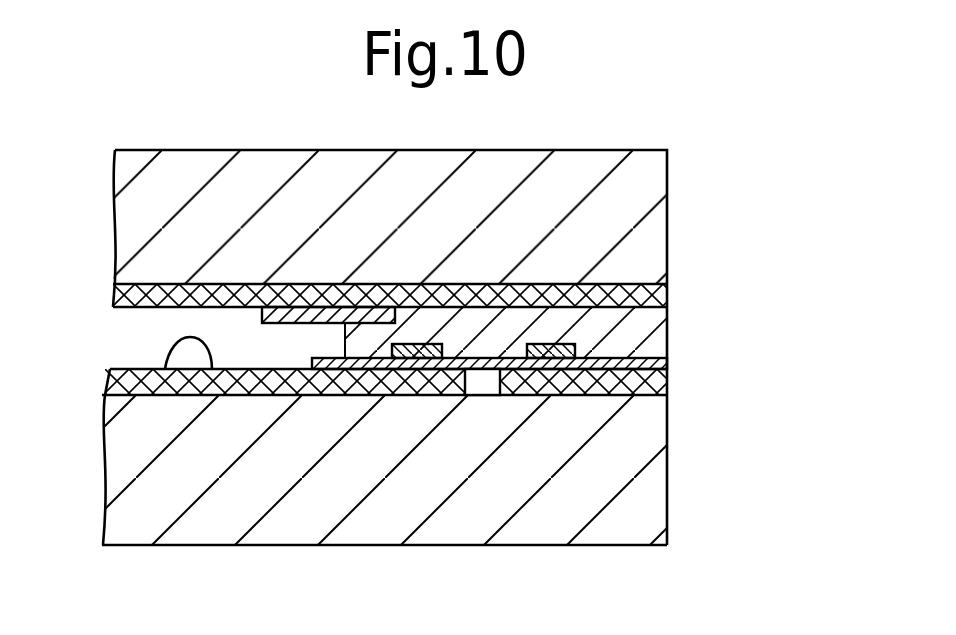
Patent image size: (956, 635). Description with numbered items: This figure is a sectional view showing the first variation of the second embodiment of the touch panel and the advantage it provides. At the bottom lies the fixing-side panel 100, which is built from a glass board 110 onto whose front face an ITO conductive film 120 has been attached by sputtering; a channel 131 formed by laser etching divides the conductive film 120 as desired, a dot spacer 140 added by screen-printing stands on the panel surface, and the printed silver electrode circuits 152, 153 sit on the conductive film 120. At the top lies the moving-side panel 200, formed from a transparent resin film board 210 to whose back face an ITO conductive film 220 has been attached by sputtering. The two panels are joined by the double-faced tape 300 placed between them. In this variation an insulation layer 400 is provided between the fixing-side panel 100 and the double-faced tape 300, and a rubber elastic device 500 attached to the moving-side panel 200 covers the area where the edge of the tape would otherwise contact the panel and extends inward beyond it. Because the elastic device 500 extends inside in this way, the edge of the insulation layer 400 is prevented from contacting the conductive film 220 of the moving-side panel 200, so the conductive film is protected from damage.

The fixing-side panel 100 is at (772, 435).
The glass board 110 is at (625, 500).
The ITO conductive film 120 is at (633, 377).
The channel 131 is at (485, 383).
The dot spacer 140 is at (182, 356).
The silver electrode circuit 152 is at (413, 344).
The silver electrode circuit 153 is at (562, 344).
The moving-side panel 200 is at (775, 158).
The transparent resin film board 210 is at (628, 192).
The ITO conductive film 220 is at (655, 290).
The double-faced tape 300 is at (643, 322).
The insulation layer 400 is at (642, 360).
The rubber elastic device 500 is at (320, 307).